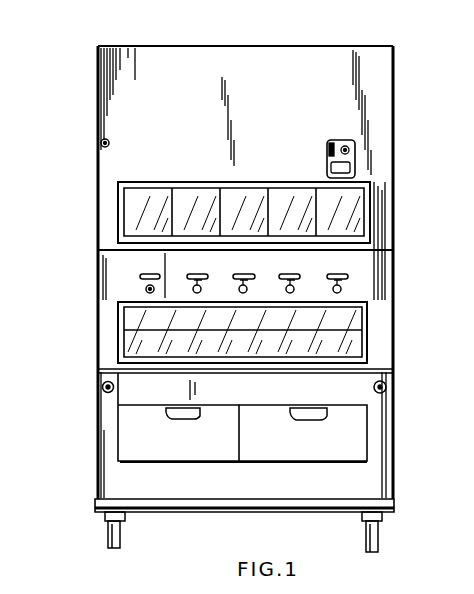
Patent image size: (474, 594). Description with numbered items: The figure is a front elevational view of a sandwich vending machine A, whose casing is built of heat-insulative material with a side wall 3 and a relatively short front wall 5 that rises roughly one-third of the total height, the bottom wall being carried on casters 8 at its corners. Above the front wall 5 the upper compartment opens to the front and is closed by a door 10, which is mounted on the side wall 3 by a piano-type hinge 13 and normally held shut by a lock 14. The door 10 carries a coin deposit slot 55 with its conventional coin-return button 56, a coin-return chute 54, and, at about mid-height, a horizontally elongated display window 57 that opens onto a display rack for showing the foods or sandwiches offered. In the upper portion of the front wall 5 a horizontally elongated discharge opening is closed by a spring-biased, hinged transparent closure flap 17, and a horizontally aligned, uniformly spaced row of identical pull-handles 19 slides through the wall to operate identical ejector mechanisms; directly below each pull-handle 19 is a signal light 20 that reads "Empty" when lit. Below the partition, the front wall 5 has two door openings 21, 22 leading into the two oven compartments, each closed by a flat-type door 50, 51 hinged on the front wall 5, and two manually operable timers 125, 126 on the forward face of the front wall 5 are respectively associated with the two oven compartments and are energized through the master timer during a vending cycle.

The vending machine A is at (393, 66).
The side wall 3 is at (139, 84).
The front wall 5 is at (372, 266).
The casters 8 is at (110, 546).
The door 10 is at (385, 107).
The piano-type hinge 13 is at (394, 190).
The lock 14 is at (101, 143).
The transparent closure flap 17 is at (352, 338).
The pull-handles 19 is at (140, 277).
The signal light 20 is at (146, 289).
The door opening 21 is at (120, 428).
The door opening 22 is at (362, 425).
The flat-type door 50 is at (150, 443).
The flat-type door 51 is at (340, 448).
The coin-return chute 54 is at (340, 168).
The coin deposit slot 55 is at (329, 150).
The coin-return button 56 is at (350, 150).
The display window 57 is at (340, 206).
The manually operable timer 125 is at (102, 387).
The manually operable timer 126 is at (387, 387).